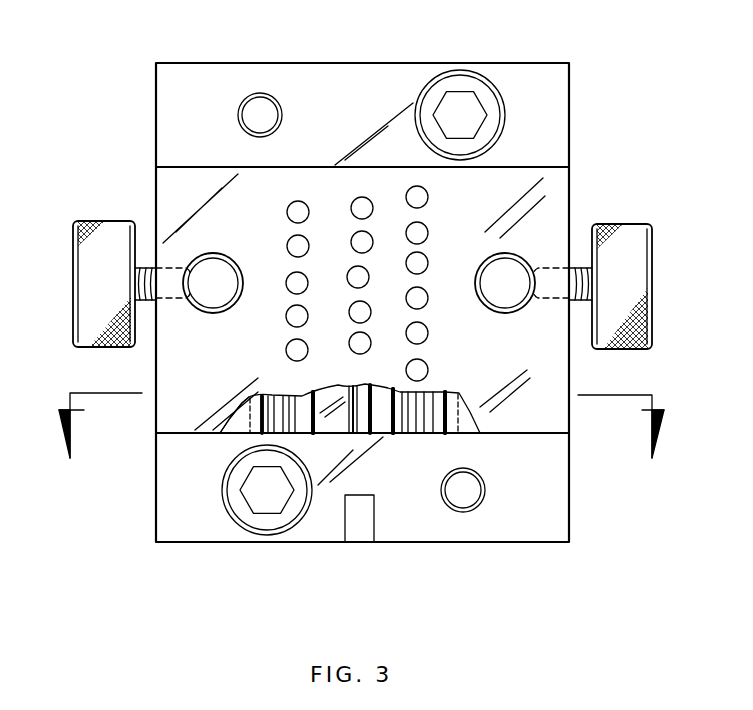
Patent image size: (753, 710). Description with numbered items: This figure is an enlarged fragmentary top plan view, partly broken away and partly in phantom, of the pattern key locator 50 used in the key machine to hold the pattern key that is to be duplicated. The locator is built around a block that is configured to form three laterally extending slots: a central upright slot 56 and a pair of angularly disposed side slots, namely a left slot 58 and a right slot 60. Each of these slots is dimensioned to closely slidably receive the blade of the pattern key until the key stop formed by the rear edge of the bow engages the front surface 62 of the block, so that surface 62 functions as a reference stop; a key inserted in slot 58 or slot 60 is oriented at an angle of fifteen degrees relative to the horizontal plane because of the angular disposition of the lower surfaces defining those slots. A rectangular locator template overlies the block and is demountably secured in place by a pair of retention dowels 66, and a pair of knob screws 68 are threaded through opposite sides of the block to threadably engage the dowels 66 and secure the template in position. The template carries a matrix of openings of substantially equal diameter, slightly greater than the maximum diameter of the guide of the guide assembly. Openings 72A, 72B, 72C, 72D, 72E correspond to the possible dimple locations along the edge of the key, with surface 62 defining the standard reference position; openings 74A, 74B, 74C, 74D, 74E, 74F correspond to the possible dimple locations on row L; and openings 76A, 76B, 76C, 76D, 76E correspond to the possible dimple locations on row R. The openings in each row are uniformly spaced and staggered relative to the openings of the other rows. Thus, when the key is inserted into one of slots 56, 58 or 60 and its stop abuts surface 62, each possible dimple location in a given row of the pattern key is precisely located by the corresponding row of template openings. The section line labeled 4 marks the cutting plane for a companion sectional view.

The section line 4- 4 is at (361, 445).
The pattern key locator 50 is at (595, 478).
The central upright slot 56 is at (358, 430).
The left slot 58 is at (292, 428).
The right slot 60 is at (431, 428).
The front surface 62 is at (213, 434).
The retention dowels 66 is at (212, 298).
The knob screws 68 is at (88, 288).
The opening 72A is at (360, 345).
The opening 72B is at (360, 312).
The opening 72C is at (358, 277).
The opening 72D is at (363, 242).
The opening 72E is at (362, 208).
The opening 74A is at (418, 370).
The opening 74B is at (418, 334).
The opening 74C is at (418, 300).
The opening 74D is at (418, 266).
The opening 74E is at (418, 235).
The opening 74F is at (418, 198).
The opening 76A is at (297, 350).
The opening 76B is at (297, 316).
The opening 76C is at (297, 282).
The opening 76D is at (298, 246).
The opening 76E is at (299, 212).